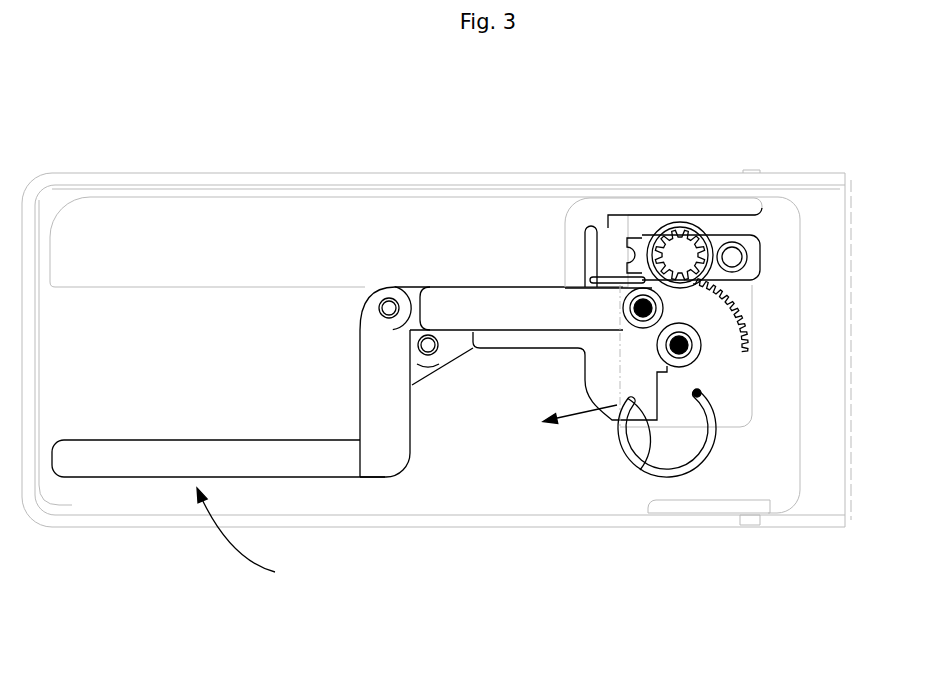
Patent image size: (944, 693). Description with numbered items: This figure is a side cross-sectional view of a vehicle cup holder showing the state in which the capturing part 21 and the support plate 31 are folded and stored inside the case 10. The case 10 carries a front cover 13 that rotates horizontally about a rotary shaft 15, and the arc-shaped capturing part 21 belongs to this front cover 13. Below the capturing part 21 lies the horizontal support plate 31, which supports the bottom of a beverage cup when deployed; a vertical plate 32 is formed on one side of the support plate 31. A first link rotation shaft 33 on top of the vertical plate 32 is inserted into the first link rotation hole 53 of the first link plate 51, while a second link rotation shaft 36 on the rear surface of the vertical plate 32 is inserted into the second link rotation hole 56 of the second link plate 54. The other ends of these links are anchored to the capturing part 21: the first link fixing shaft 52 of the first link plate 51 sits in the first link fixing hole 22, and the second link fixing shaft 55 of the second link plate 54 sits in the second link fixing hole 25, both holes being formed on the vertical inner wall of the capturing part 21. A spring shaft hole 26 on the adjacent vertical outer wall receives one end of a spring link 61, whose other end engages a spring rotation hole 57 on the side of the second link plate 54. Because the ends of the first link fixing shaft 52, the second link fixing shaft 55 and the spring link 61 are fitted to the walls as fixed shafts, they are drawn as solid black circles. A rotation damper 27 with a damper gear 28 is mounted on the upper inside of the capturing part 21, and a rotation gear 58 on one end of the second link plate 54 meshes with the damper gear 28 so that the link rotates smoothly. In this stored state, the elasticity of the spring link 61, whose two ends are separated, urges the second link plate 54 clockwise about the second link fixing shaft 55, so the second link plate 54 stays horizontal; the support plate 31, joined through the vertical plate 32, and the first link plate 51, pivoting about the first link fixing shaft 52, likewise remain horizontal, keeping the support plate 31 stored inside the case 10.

The case 10 is at (187, 180).
The front cover 13 is at (64, 197).
The rotary shaft 15 is at (748, 177).
The capturing part 21 is at (268, 198).
The first link fixing hole 22 is at (590, 290).
The second link fixing hole 25 is at (705, 327).
The spring shaft hole 26 is at (700, 393).
The rotation damper 27 is at (728, 243).
The damper gear 28 is at (672, 222).
The support plate 31 is at (108, 456).
The vertical plate 32 is at (390, 455).
The first link rotation shaft 33 is at (389, 296).
The second link rotation shaft 36 is at (428, 356).
The first link plate 51 is at (503, 310).
The first link fixing shaft 52 is at (642, 300).
The first link rotation hole 53 is at (398, 292).
The second link plate 54 is at (502, 340).
The second link fixing shaft 55 is at (700, 345).
The second link rotation hole 56 is at (438, 348).
The spring rotation hole 57 is at (648, 445).
The rotation gear 58 is at (712, 293).
The spring link 61 is at (681, 465).